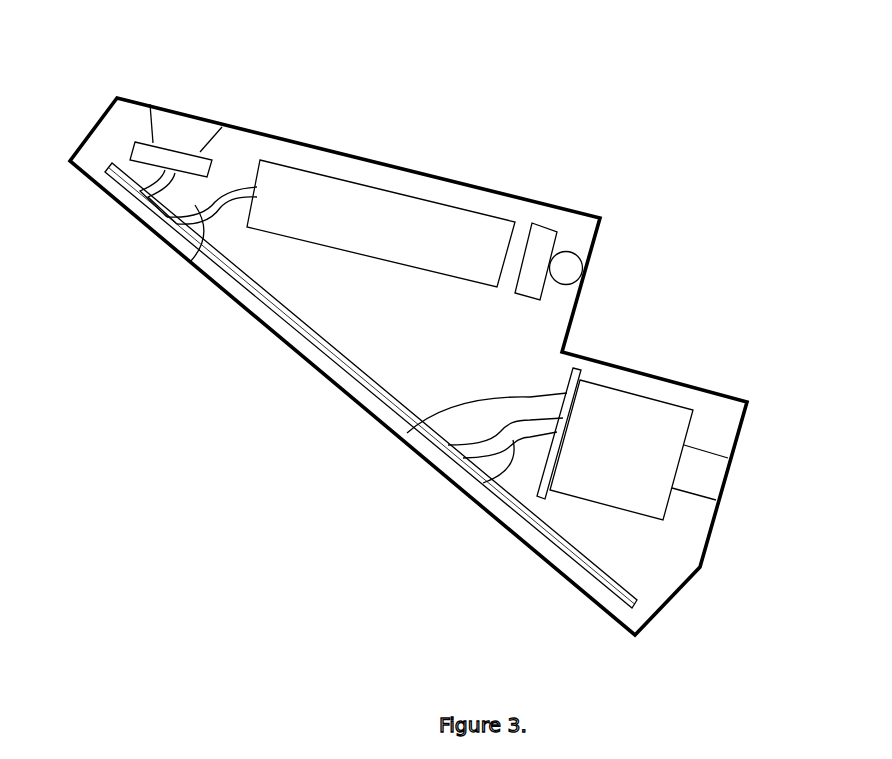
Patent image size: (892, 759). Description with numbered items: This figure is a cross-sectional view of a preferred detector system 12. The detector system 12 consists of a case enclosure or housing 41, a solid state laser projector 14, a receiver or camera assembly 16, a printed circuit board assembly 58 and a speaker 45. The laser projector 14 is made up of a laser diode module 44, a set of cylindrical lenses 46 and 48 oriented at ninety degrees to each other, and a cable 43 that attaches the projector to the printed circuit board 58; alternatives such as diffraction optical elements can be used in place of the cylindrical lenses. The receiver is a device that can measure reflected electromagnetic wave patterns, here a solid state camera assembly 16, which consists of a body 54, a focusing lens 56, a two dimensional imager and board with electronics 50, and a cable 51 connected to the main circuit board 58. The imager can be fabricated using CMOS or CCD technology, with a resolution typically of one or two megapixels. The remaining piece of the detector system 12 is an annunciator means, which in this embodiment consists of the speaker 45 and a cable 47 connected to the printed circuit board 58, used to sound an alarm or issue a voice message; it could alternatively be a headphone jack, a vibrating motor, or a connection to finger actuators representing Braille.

The detector system 12 is at (317, 375).
The solid state laser projector 14 is at (577, 283).
The camera assembly 16 is at (717, 517).
The housing 41 is at (680, 592).
The cable 43 is at (188, 262).
The laser diode module 44 is at (355, 213).
The speaker 45 is at (158, 128).
The cylindrical lens 46 is at (537, 242).
The cable 47 is at (127, 193).
The cylindrical lens 48 is at (571, 268).
The two dimensional imager and board with electronics 50 is at (400, 440).
The cable 51 is at (465, 492).
The body 54 is at (630, 423).
The focusing lens 56 is at (710, 467).
The printed circuit board assembly 58 is at (263, 296).